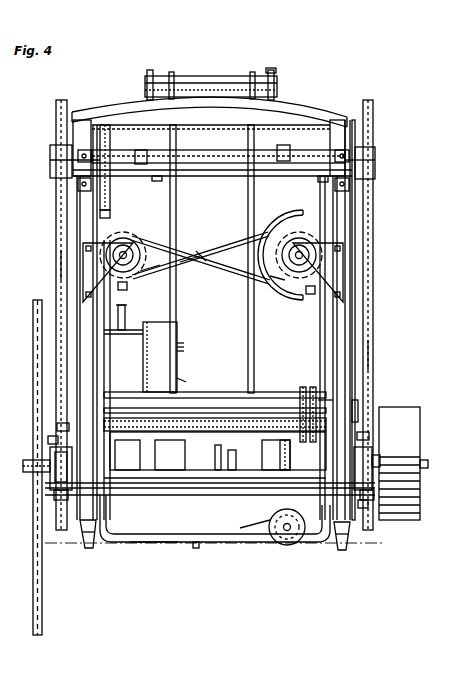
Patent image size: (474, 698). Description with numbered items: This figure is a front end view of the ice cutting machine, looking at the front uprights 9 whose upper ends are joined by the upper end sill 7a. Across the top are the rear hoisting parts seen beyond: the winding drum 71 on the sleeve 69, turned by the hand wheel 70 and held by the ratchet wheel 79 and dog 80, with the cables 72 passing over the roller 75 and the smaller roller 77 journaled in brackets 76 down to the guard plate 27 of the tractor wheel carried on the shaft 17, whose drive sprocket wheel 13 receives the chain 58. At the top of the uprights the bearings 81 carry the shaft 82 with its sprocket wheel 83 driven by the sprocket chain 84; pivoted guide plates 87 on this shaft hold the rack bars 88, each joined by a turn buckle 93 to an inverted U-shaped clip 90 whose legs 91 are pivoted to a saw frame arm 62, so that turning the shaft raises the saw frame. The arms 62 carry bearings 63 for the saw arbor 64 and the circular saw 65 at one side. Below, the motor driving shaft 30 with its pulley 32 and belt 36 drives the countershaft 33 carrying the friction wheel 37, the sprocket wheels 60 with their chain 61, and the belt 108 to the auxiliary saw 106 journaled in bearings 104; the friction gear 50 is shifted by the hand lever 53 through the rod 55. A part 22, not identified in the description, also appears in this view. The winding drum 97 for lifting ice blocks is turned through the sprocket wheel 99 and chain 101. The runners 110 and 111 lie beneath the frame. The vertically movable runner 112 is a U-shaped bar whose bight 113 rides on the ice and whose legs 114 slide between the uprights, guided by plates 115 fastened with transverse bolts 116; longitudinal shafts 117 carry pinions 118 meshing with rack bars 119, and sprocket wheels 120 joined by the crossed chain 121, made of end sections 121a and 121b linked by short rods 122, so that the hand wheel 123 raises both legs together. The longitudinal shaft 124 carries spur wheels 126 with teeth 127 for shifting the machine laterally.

The upper end sill 7a is at (308, 110).
The front upright 9 is at (80, 330).
The sprocket wheel 13 is at (362, 508).
The shaft 17 is at (356, 406).
The plate 22 is at (290, 452).
The guard plate 27 is at (170, 466).
The driving shaft 30 is at (179, 335).
The pulley 32 is at (184, 349).
The countershaft 33 is at (428, 464).
The belt 36 is at (186, 382).
The friction wheel 37 is at (130, 470).
The friction gear 50 is at (123, 353).
The hand lever 53 is at (126, 318).
The rod 55 is at (48, 440).
The chain 58 is at (392, 410).
The sprocket wheel 60 is at (218, 468).
The chain 61 is at (232, 468).
The arm 62 is at (23, 466).
The bearing 63 is at (60, 500).
The saw arbor 64 is at (210, 499).
The circular saw 65 is at (43, 600).
The sleeve 69 is at (290, 153).
The hand wheel 70 is at (356, 134).
The winding drum 71 is at (200, 150).
The cable 72 is at (177, 198).
The roller 75 is at (272, 70).
The bracket 76 is at (147, 82).
The roller 77 is at (215, 76).
The ratchet wheel 79 is at (338, 130).
The dog 80 is at (322, 182).
The bearing 81 is at (58, 190).
The shaft 82 is at (156, 181).
The sprocket wheel 83 is at (110, 214).
The sprocket chain 84 is at (110, 140).
The guide plate 87 is at (50, 153).
The rack bar 88 is at (56, 262).
The inverted U-shaped clip 90 is at (66, 447).
The leg 91 is at (70, 452).
The turn buckle 93 is at (57, 427).
The winding drum 97 is at (273, 392).
The sprocket wheel 99 is at (308, 387).
The chain 101 is at (324, 400).
The bearing 104 is at (265, 542).
The auxiliary saw 106 is at (196, 548).
The belt 108 is at (275, 465).
The runner 110 is at (342, 550).
The runner 111 is at (86, 548).
The vertically movable runner 112 is at (148, 545).
The bight 113 is at (168, 545).
The leg 114 is at (93, 350).
The plate 115 is at (83, 270).
The transverse bolt 116 is at (86, 296).
The longitudinal shaft 117 is at (119, 256).
The pinion 118 is at (133, 235).
The rack bar 119 is at (127, 286).
The sprocket wheel 120 is at (160, 272).
The crossed chain 121 is at (176, 243).
The end section 121a is at (200, 270).
The end section 121b is at (296, 214).
The short rod 122 is at (214, 262).
The hand wheel 123 is at (249, 305).
The longitudinal shaft 124 is at (283, 532).
The spur wheel 126 is at (272, 540).
The tooth 127 is at (291, 531).